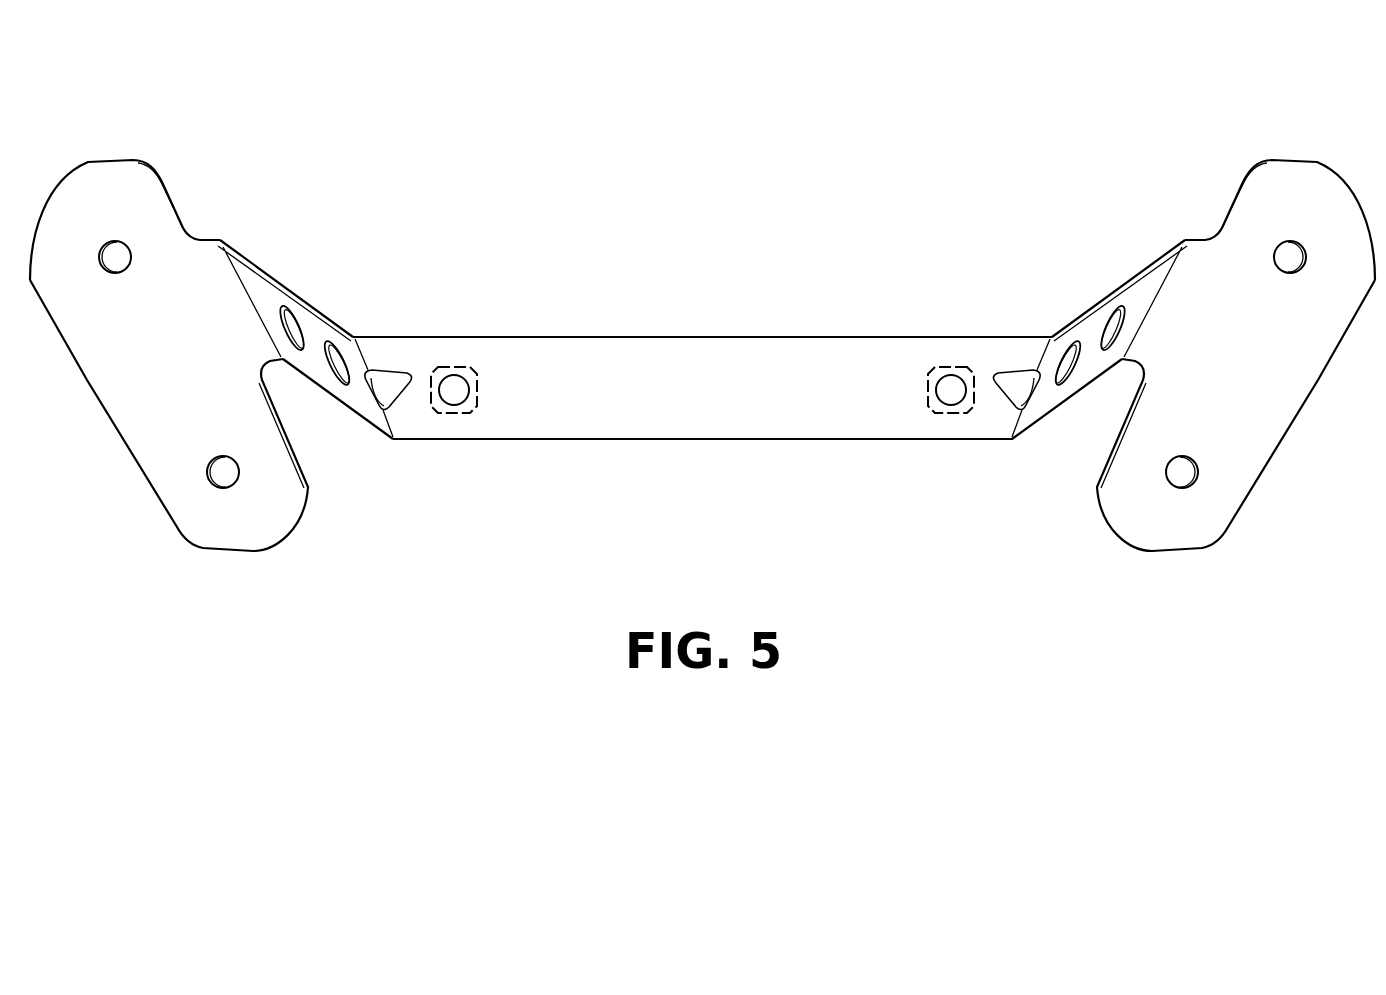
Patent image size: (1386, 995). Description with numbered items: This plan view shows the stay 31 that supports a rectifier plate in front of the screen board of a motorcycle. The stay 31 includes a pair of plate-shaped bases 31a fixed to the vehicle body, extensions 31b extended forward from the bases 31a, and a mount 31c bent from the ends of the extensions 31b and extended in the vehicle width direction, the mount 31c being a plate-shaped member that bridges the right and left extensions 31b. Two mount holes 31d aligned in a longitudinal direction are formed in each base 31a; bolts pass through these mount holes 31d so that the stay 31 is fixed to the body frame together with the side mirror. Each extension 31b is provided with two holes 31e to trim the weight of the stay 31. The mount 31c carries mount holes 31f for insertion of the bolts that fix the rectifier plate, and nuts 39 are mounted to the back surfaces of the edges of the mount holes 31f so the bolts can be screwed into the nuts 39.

The stay 31 is at (737, 123).
The base 31a is at (97, 173).
The extension 31b is at (322, 328).
The mount 31c is at (723, 353).
The mount hole 31d is at (133, 257).
The hole 31e is at (277, 307).
The mount hole 31f is at (458, 400).
The nut 39 is at (451, 366).